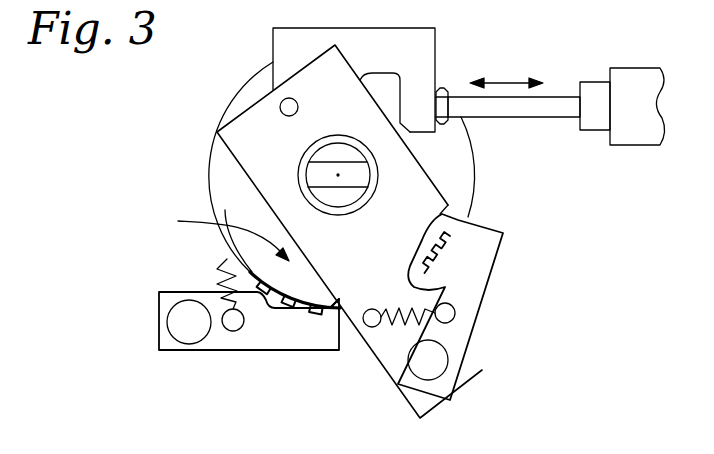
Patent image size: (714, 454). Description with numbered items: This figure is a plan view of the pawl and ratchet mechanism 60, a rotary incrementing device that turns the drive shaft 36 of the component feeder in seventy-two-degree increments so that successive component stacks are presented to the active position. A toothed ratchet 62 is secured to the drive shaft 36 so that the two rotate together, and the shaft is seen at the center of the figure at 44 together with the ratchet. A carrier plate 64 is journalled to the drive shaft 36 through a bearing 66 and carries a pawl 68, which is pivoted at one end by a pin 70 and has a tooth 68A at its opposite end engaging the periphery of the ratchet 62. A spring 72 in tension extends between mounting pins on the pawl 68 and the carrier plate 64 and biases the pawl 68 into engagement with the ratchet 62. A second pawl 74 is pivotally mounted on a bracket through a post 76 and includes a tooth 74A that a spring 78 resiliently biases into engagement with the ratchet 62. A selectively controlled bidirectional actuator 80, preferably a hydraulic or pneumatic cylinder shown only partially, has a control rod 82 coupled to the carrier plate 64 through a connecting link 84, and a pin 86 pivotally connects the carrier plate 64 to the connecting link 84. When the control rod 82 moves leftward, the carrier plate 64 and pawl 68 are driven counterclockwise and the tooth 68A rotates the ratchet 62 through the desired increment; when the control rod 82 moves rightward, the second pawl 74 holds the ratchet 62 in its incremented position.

The drive shaft 36 is at (339, 205).
The drive shaft 44 is at (360, 172).
The pawl and ratchet mechanism 60 is at (500, 47).
The toothed ratchet 62 is at (220, 237).
The carrier plate 64 is at (257, 153).
The bearing 66 is at (356, 135).
The pawl 68 is at (474, 268).
The tooth 68A is at (465, 223).
The pin 70 is at (442, 355).
The spring 72 is at (400, 327).
The second pawl 74 is at (274, 335).
The tooth 74A is at (334, 311).
The post 76 is at (184, 321).
The spring 78 is at (220, 279).
The bidirectional actuator 80 is at (623, 112).
The control rod 82 is at (522, 110).
The connecting link 84 is at (392, 54).
The pin 86 is at (280, 107).